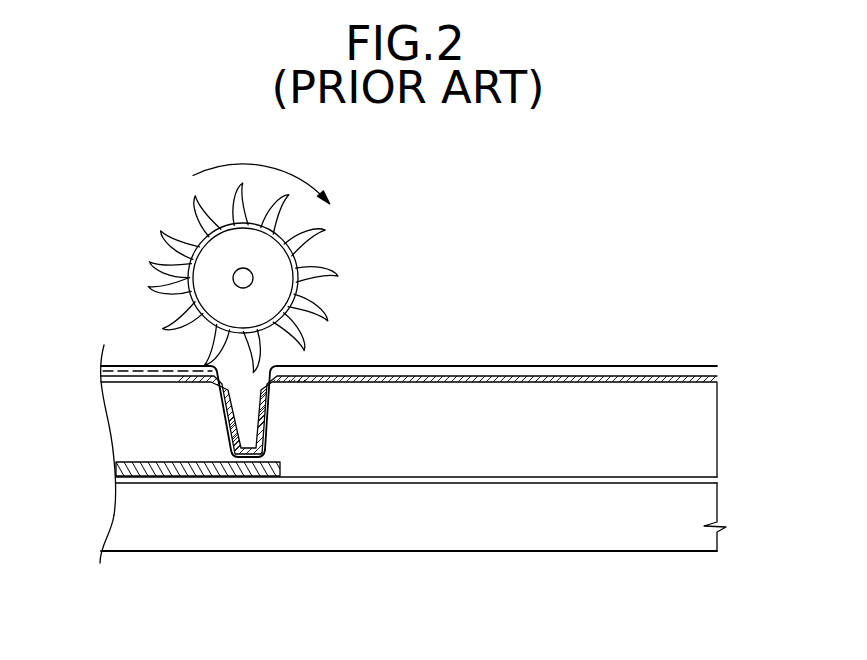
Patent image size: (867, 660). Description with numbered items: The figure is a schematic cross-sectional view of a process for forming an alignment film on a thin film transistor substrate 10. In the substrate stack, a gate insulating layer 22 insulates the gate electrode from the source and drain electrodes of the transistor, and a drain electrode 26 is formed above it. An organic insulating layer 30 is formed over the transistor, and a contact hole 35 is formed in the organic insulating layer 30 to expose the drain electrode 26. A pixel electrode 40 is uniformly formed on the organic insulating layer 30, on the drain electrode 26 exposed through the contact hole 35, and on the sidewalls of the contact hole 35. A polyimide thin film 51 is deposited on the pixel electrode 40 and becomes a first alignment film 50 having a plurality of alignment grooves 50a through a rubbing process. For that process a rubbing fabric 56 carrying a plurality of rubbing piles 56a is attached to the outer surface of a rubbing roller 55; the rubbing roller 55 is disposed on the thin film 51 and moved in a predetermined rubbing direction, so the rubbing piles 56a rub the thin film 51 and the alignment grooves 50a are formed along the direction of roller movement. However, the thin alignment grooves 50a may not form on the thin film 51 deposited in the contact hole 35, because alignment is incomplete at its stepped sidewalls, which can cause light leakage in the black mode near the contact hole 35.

The semiconductor substrate 10 is at (602, 530).
The gate insulating layer 22 is at (183, 485).
The drain electrode 26 is at (243, 462).
The organic insulating layer 30 is at (456, 384).
The pixel electrode 40 is at (537, 384).
The contact hole 35 is at (243, 417).
The first alignment film 50 is at (98, 371).
The alignment grooves 50a is at (130, 363).
The polyimide thin film 51 is at (601, 366).
The rubbing roller 55 is at (187, 273).
The rubbing fabric 56 is at (305, 258).
The rubbing piles 56a is at (190, 209).